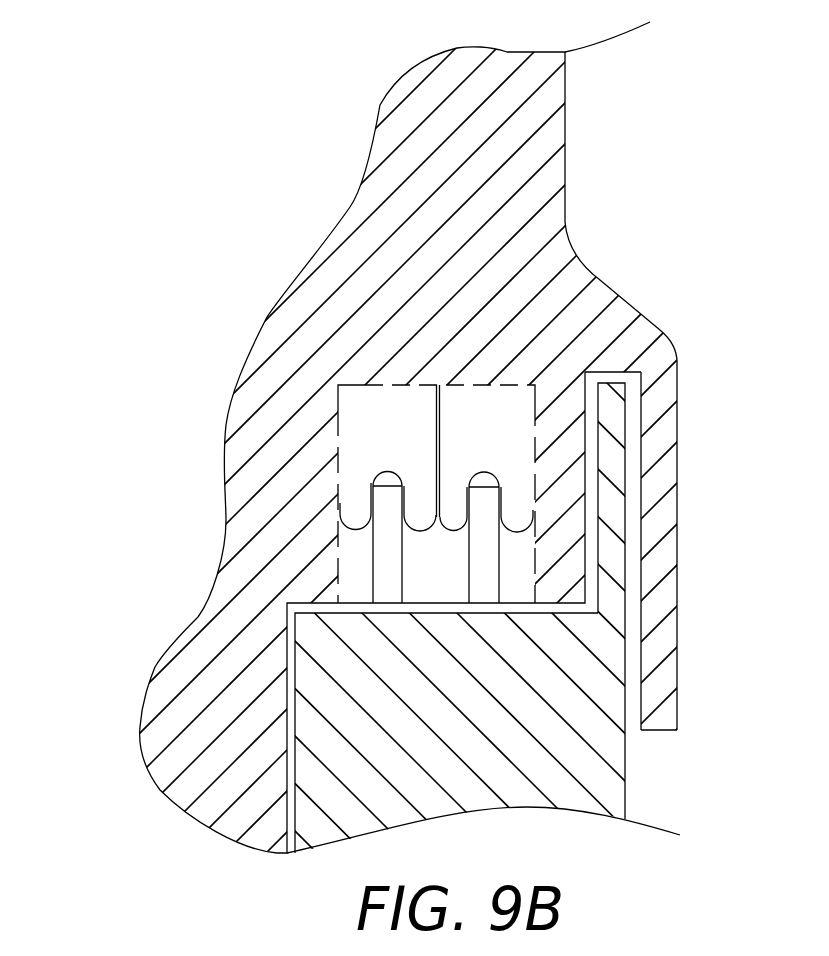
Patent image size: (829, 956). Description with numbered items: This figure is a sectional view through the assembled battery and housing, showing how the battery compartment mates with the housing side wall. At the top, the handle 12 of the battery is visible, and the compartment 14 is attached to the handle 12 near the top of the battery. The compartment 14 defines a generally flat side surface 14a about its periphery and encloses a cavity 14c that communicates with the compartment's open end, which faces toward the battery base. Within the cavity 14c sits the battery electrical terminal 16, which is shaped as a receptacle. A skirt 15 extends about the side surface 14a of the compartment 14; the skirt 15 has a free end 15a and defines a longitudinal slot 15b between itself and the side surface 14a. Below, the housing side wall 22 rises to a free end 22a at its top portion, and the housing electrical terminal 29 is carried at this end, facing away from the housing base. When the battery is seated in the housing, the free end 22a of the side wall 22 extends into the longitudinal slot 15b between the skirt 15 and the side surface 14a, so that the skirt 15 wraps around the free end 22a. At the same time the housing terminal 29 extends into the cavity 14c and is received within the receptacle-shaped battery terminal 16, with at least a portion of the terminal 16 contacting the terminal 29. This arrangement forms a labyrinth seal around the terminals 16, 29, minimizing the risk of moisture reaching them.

The handle 12 is at (565, 135).
The compartment 14 is at (337, 415).
The side surface 14a is at (658, 342).
The cavity 14c is at (353, 477).
The skirt 15 is at (678, 418).
The free end 15a is at (664, 752).
The longitudinal slot 15b is at (636, 514).
The electrical terminal 16 is at (485, 413).
The side wall 22 is at (470, 787).
The free end 22a is at (627, 473).
The electrical terminal 29 is at (483, 540).